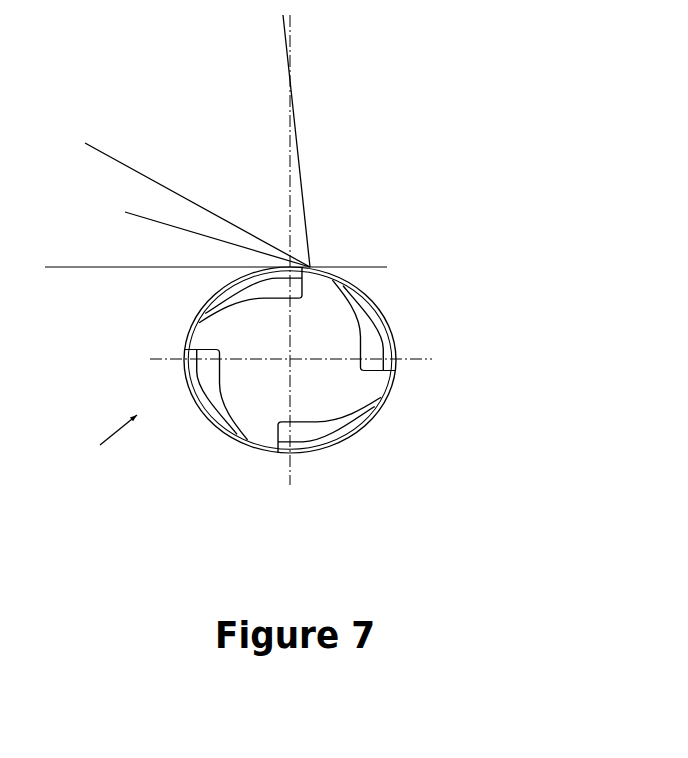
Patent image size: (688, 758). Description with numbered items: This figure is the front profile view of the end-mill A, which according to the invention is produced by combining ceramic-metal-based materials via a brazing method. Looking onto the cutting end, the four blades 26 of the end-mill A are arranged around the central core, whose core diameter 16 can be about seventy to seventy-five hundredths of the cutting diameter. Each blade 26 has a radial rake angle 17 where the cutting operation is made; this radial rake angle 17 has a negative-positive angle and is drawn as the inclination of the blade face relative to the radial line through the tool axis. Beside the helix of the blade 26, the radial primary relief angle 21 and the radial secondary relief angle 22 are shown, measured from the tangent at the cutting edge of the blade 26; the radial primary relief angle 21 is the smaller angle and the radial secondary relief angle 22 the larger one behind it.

The core diameter 16 is at (383, 402).
The radial rake angle 17 is at (260, 38).
The radial primary relief angle 21 is at (147, 192).
The radial secondary relief angle 22 is at (93, 152).
The blades 26 is at (310, 267).
The end-mill A is at (103, 443).